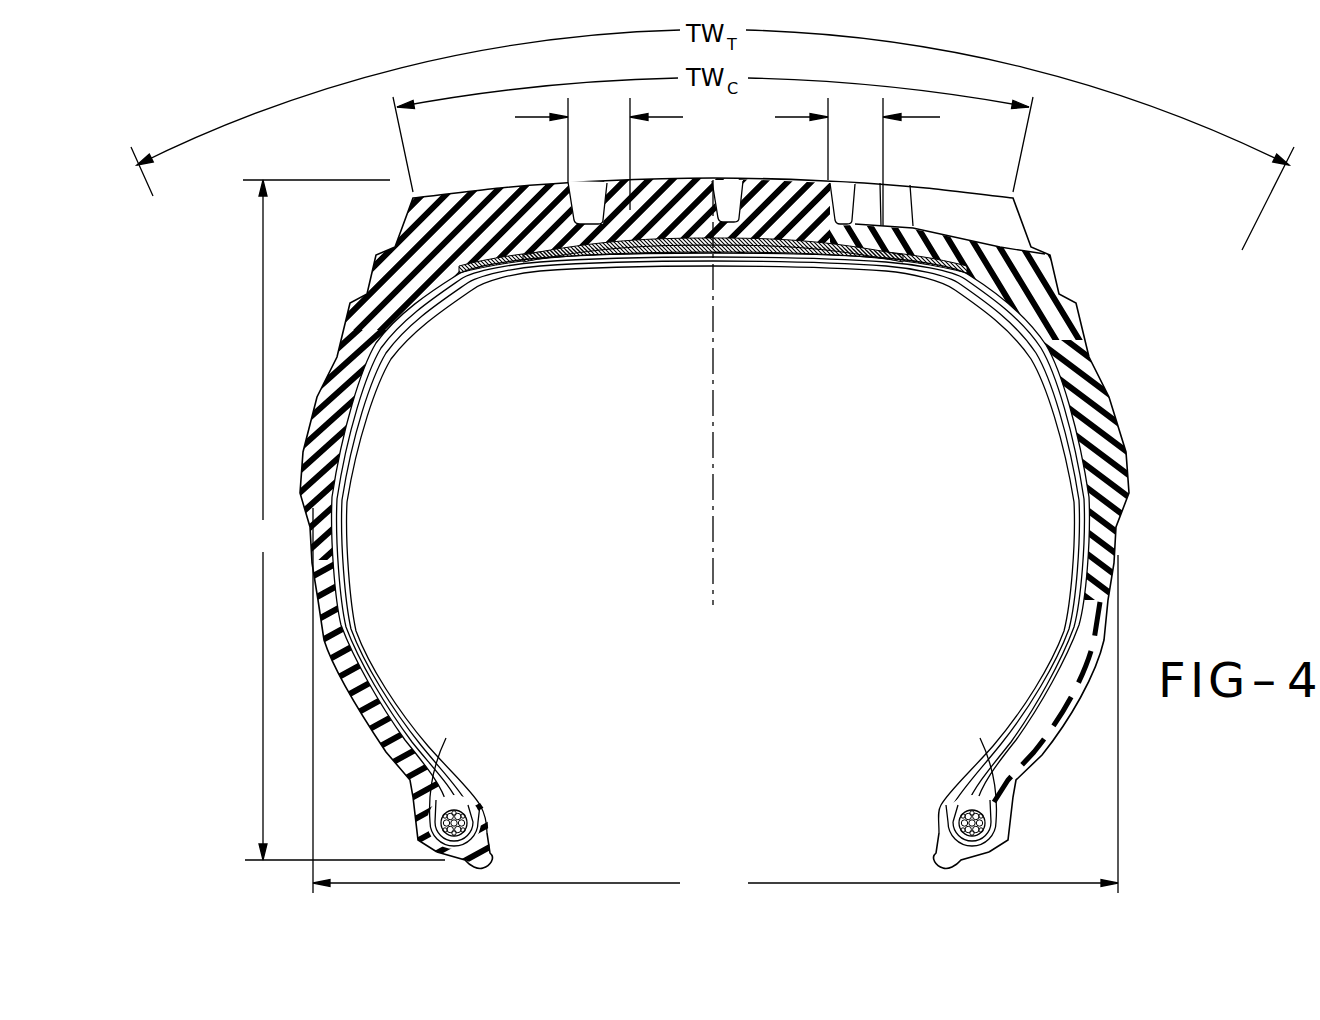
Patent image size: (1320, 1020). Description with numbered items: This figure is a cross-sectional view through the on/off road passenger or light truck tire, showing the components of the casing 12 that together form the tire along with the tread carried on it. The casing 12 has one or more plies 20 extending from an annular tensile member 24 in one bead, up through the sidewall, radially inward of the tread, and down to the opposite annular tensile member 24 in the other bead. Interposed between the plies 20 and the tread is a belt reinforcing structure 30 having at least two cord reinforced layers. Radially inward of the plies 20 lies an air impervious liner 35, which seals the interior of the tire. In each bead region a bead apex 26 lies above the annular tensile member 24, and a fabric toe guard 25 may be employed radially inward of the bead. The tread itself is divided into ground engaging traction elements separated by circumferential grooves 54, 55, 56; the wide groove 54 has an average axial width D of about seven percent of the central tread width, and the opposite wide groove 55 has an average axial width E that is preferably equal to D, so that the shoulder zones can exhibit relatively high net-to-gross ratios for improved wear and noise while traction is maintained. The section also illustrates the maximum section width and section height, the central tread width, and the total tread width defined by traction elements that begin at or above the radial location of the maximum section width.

The casing 12 is at (1073, 367).
The plies 20 is at (1090, 502).
The annular tensile member 24 is at (467, 815).
The fabric toe guard 25 is at (500, 862).
The bead apex 26 is at (447, 780).
The belt reinforcing structure 30 is at (622, 246).
The air impervious liner 35 is at (1070, 422).
The circumferential groove 54 is at (606, 190).
The circumferential groove 55 is at (847, 190).
The circumferential groove 56 is at (740, 190).